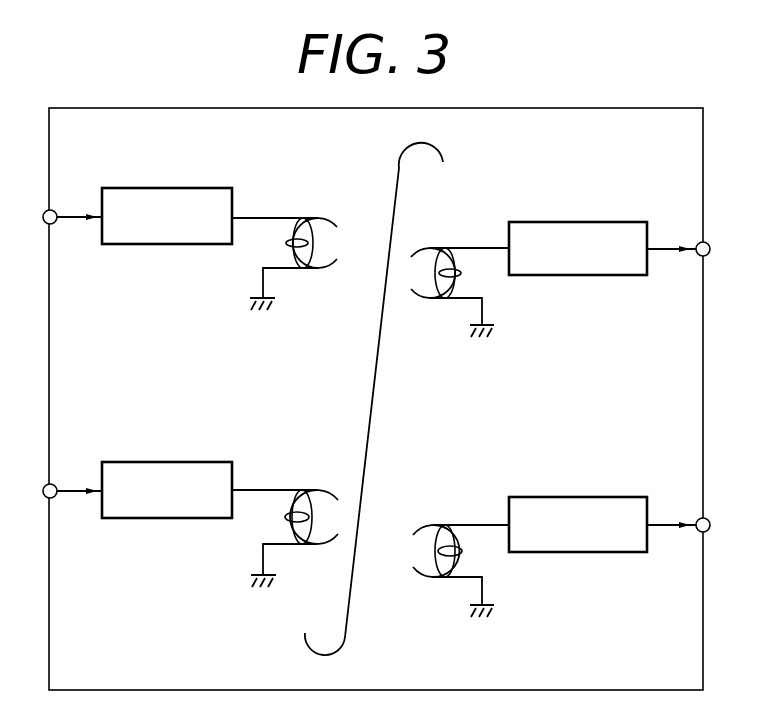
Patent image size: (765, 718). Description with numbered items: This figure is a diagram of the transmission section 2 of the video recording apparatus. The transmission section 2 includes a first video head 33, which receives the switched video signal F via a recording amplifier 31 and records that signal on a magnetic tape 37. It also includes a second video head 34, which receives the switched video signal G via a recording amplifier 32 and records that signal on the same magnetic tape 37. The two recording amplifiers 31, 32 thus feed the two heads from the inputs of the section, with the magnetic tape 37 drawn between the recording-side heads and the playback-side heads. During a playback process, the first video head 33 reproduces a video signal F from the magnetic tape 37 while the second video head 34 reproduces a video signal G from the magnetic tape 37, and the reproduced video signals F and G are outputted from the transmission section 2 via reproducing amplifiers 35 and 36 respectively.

The transmission section 2 is at (647, 108).
The recording amplifier 31 is at (177, 188).
The recording amplifier 32 is at (182, 462).
The first video head 33 is at (313, 268).
The second video head 34 is at (319, 490).
The reproducing amplifier 35 is at (602, 222).
The reproducing amplifier 36 is at (593, 497).
The magnetic tape 37 is at (397, 190).